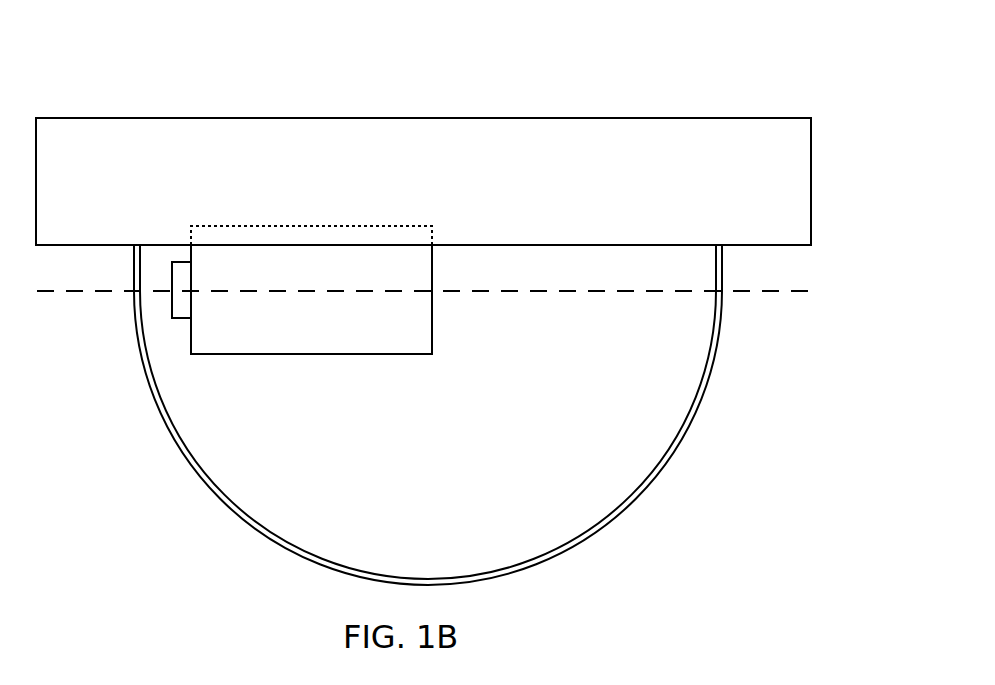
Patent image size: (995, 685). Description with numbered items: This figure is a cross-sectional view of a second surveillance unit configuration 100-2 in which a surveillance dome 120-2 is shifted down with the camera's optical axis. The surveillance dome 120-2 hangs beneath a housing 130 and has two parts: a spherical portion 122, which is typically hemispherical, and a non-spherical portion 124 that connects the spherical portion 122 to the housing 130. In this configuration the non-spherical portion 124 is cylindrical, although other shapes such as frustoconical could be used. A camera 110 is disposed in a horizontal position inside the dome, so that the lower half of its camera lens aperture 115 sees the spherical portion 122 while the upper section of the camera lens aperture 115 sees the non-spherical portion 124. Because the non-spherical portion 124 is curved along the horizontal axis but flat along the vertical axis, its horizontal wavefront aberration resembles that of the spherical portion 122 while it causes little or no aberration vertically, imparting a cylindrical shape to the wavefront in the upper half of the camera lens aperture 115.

The second surveillance unit configuration 100-2 is at (749, 94).
The housing 130 is at (811, 148).
The surveillance dome 120-2 is at (680, 438).
The camera 110 is at (330, 354).
The camera lens aperture 115 is at (176, 320).
The non-spherical portion 124 is at (825, 245).
The spherical portion 122 is at (822, 297).